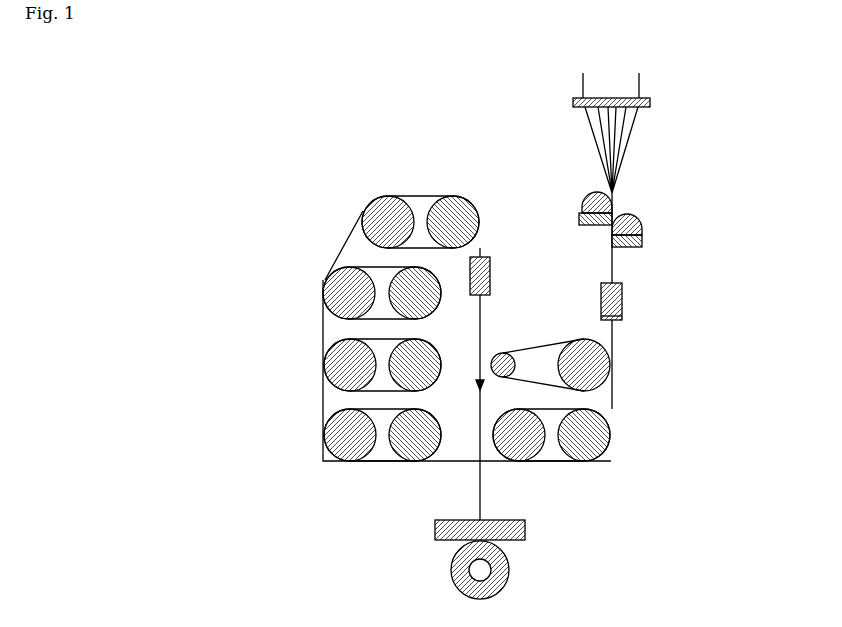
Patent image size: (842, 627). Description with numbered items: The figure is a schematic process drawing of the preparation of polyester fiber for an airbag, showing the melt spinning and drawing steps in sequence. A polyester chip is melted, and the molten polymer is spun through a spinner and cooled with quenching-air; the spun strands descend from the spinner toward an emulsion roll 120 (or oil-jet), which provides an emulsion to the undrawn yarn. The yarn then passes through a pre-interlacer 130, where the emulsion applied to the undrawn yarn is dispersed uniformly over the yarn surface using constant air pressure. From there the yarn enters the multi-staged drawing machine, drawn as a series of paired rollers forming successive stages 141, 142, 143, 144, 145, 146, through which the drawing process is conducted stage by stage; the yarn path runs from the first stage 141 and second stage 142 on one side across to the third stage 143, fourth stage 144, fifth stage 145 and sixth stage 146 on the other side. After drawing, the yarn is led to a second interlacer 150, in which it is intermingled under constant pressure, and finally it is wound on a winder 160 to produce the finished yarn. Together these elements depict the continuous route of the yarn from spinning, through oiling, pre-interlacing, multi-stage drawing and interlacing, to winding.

The emulsion roll 120 is at (646, 208).
The pre-interlacer 130 is at (628, 300).
The multi-staged drawing machine 141 is at (618, 368).
The multi-staged drawing machine 142 is at (617, 440).
The multi-staged drawing machine 143 is at (312, 432).
The multi-staged drawing machine 144 is at (312, 362).
The multi-staged drawing machine 145 is at (317, 283).
The multi-staged drawing machine 146 is at (355, 208).
The second interlacer 150 is at (495, 250).
The winder 160 is at (513, 568).